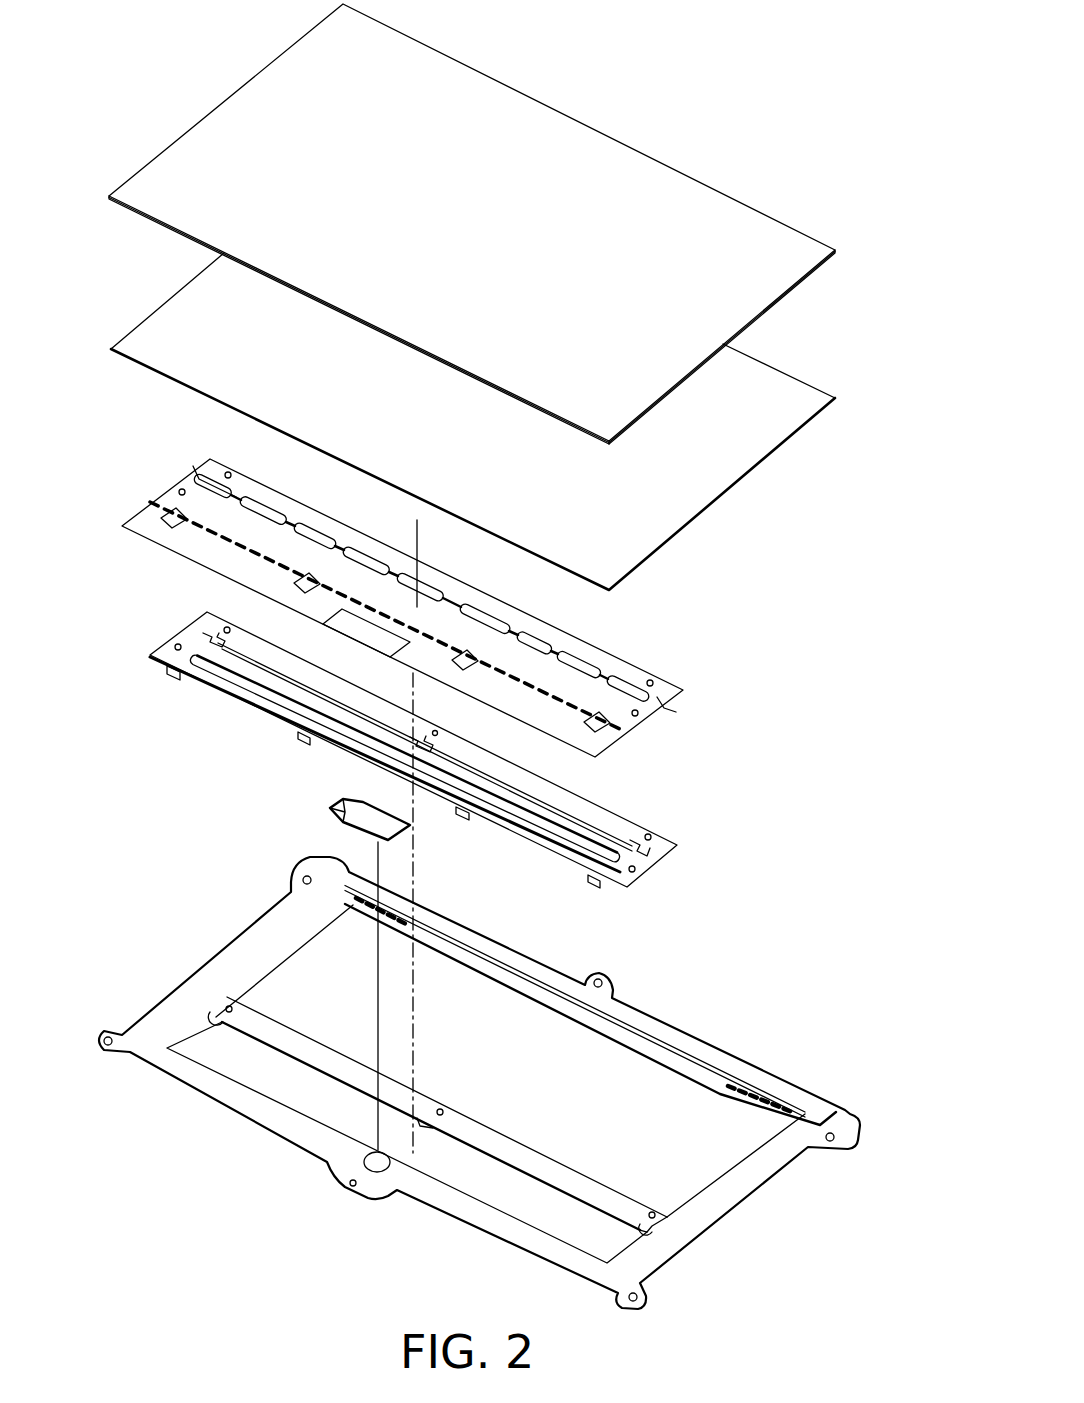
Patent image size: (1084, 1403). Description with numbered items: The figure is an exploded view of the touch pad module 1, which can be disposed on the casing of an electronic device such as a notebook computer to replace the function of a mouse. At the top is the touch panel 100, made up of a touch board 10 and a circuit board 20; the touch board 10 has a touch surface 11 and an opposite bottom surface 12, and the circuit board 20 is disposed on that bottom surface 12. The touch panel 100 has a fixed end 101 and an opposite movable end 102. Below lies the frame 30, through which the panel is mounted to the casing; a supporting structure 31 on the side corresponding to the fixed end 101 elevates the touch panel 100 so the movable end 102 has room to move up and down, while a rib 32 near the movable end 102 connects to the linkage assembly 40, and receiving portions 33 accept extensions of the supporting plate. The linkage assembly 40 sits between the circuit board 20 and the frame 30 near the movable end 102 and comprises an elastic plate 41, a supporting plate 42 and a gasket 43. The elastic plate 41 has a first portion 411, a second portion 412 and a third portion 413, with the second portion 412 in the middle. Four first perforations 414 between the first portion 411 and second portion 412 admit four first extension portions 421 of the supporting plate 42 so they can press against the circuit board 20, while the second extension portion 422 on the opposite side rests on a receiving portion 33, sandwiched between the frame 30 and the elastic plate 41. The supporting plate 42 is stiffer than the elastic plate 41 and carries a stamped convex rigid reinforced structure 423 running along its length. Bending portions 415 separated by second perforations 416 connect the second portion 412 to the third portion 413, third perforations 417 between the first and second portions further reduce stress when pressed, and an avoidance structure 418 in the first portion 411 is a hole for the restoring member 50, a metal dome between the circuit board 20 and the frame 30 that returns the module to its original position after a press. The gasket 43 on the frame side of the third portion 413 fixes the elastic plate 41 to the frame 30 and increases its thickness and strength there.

The touch pad module 1 is at (143, 74).
The touch board 10 is at (496, 224).
The touch surface 11 is at (741, 224).
The bottom surface 12 is at (763, 325).
The circuit board 20 is at (815, 410).
The touch panel 100 is at (893, 187).
The fixed end 101 is at (600, 128).
The movable end 102 is at (145, 268).
The frame 30 is at (479, 1083).
The supporting structure 31 is at (706, 1056).
The rib 32 is at (576, 1181).
The receiving portion 33 is at (215, 1018).
The linkage assembly 40 is at (153, 428).
The elastic plate 41 is at (431, 607).
The first portion 411 is at (610, 745).
The second portion 412 is at (409, 625).
The third portion 413 is at (489, 570).
The first perforation 414 is at (158, 508).
The bending portion 415 is at (242, 500).
The second perforation 416 is at (207, 483).
The third perforation 417 is at (217, 535).
The avoidance structure 418 is at (343, 617).
The supporting plate 42 is at (420, 754).
The first extension portion 421 is at (170, 667).
The second extension portion 422 is at (203, 633).
The rigid reinforced structure 423 is at (547, 827).
The gasket 43 is at (685, 843).
The restoring member 50 is at (355, 802).